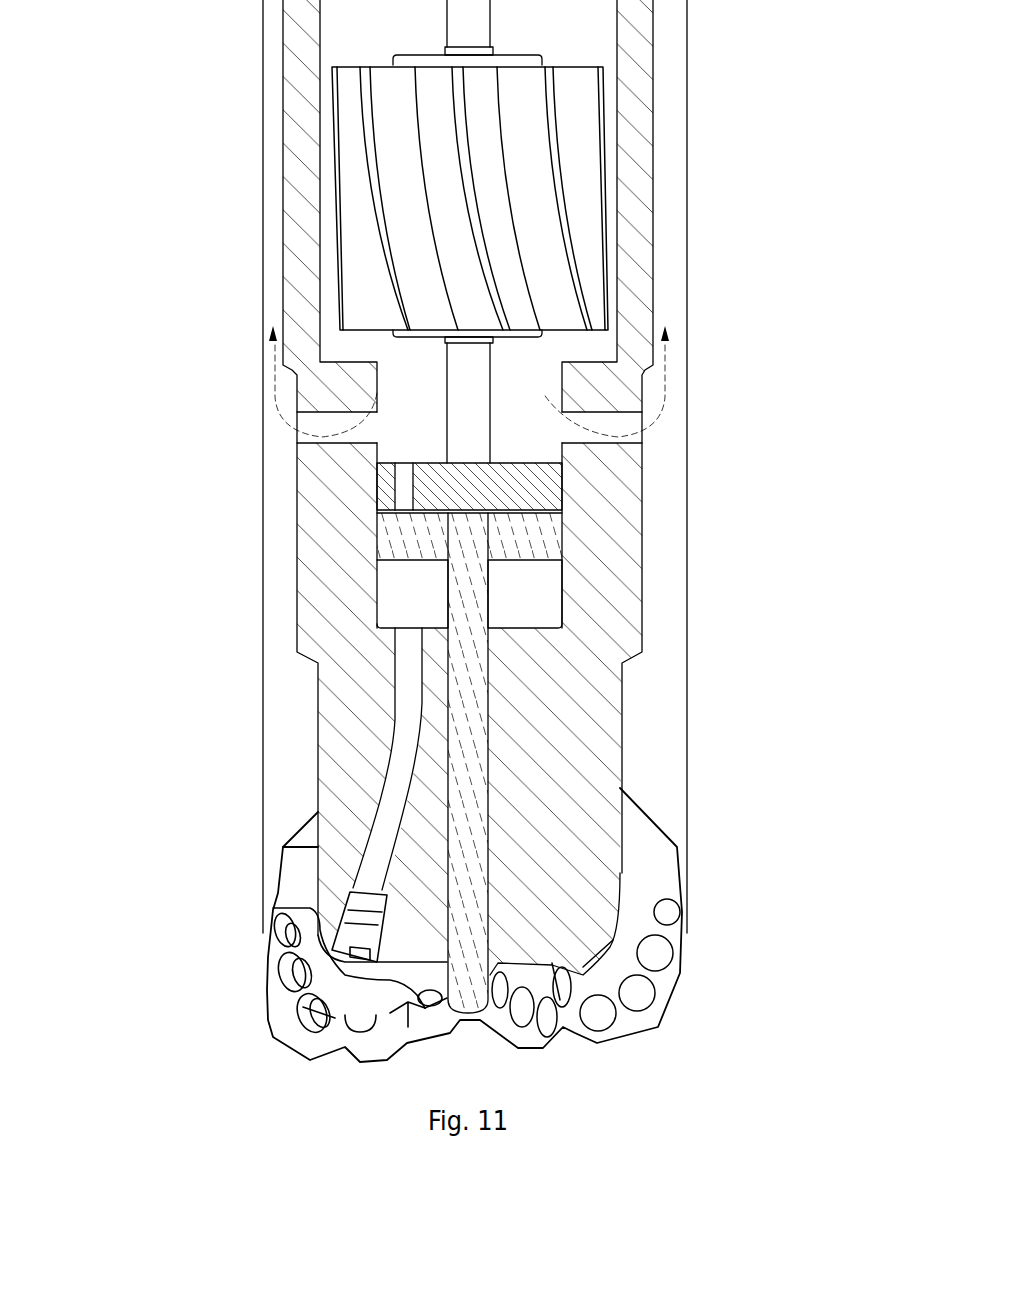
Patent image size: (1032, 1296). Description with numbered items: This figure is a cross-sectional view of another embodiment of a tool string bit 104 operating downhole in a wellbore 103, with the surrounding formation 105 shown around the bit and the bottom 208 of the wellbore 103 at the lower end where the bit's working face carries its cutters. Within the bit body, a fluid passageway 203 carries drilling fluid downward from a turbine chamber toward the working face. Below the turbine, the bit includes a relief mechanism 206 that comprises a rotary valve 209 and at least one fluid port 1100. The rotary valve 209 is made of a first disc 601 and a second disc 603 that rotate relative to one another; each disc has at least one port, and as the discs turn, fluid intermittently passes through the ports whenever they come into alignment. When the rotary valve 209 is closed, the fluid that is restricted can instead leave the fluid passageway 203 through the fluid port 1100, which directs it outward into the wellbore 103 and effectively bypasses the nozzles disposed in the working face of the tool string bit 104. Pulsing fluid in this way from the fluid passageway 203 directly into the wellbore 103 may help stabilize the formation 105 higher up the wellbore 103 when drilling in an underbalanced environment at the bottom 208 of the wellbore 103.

The wellbore 103 is at (687, 92).
The tool string bit 104 is at (230, 136).
The formation 105 is at (729, 1060).
The fluid passageway 203 is at (687, 268).
The relief mechanism 206 is at (318, 469).
The bottom of the wellbore 208 is at (322, 1043).
The rotary valve 209 is at (578, 511).
The first disc 601 is at (443, 473).
The second disc 603 is at (520, 548).
The fluid port 1100 is at (664, 445).